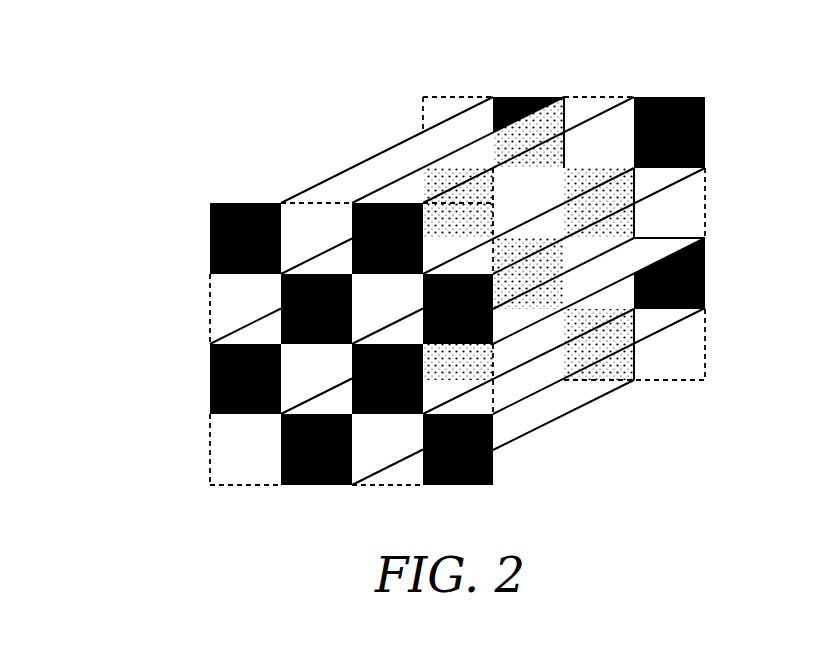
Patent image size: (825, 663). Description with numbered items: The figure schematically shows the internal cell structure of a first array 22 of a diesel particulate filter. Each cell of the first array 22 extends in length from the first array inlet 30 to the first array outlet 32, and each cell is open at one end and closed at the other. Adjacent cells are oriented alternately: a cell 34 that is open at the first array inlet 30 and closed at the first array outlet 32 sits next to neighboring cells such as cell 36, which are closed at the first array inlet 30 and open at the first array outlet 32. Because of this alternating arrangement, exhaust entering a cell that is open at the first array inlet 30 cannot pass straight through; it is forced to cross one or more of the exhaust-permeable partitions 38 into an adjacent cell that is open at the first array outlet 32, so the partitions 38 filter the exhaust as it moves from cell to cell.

The first array 22 is at (490, 287).
The first array inlet 30 is at (495, 467).
The first array outlet 32 is at (705, 363).
The cell 34 is at (412, 156).
The cell 36 is at (482, 154).
The exhaust-permeable partition 38 is at (667, 190).